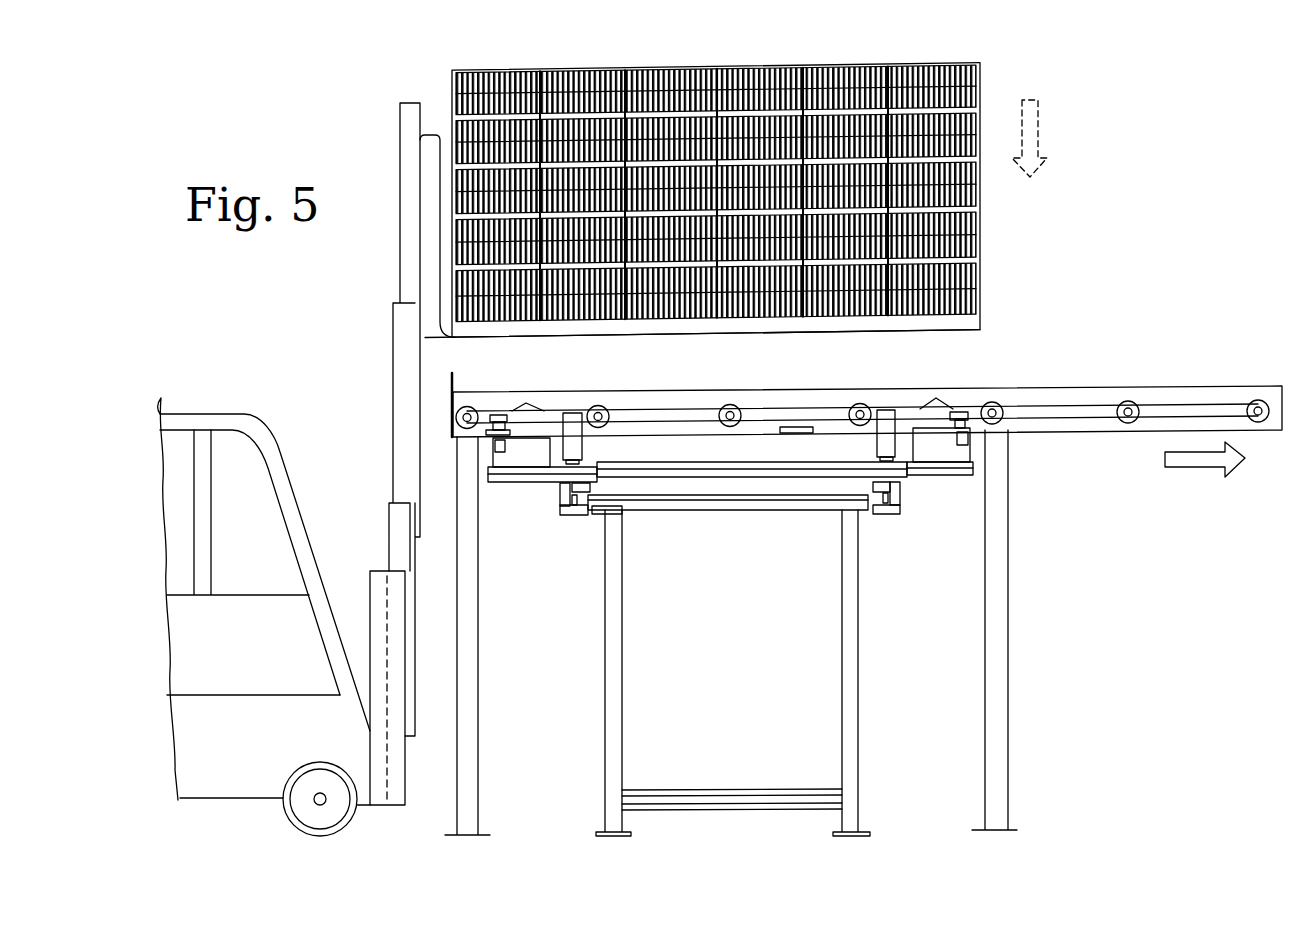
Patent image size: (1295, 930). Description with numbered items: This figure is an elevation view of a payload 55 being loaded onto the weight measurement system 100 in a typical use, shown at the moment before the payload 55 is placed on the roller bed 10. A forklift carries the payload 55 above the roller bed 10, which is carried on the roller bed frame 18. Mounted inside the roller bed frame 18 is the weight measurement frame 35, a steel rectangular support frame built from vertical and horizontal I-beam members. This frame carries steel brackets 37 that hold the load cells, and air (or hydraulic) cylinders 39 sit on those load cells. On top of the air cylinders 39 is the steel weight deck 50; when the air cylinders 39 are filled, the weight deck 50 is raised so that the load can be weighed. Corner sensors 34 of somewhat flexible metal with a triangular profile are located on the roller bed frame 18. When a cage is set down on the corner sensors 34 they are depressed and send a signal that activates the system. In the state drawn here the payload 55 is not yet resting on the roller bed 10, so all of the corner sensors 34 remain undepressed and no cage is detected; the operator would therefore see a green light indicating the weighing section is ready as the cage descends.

The payload 55 is at (846, 66).
The weight measurement system 100 is at (1030, 290).
The roller bed 10 is at (1077, 386).
The roller bed frame 18 is at (1005, 645).
The corner sensors 34 is at (510, 410).
The weight deck 50 is at (538, 481).
The air cylinders 39 is at (577, 512).
The steel brackets 37 is at (617, 519).
The weight measurement frame 35 is at (617, 685).